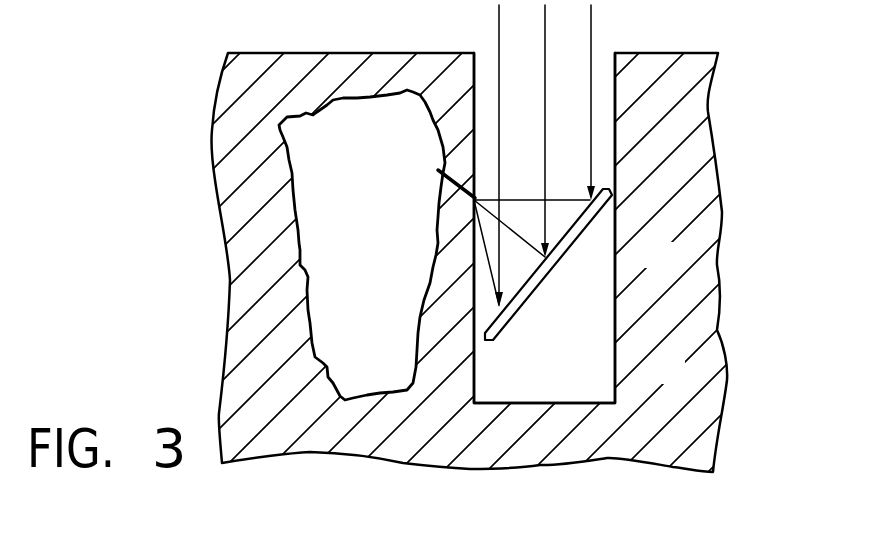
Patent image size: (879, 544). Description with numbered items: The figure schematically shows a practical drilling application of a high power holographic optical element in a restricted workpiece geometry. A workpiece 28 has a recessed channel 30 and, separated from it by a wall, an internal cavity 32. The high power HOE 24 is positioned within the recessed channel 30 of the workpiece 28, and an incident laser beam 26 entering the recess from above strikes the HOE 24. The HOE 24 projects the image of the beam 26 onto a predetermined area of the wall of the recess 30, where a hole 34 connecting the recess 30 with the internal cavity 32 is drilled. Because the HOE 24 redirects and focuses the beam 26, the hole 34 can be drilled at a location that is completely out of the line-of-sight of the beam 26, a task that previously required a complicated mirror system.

The high power HOE 24 is at (583, 264).
The incident laser beam 26 is at (539, 55).
The workpiece 28 is at (662, 47).
The recessed channel 30 is at (573, 352).
The internal cavity 32 is at (318, 252).
The hole 34 is at (445, 184).